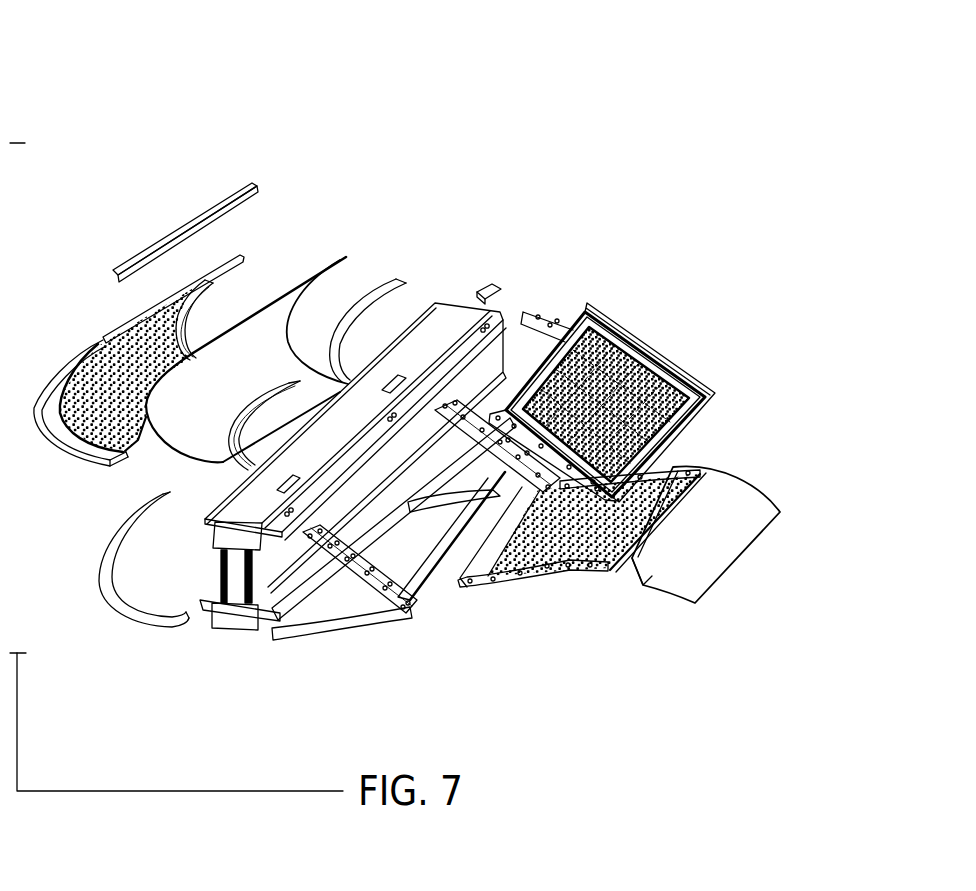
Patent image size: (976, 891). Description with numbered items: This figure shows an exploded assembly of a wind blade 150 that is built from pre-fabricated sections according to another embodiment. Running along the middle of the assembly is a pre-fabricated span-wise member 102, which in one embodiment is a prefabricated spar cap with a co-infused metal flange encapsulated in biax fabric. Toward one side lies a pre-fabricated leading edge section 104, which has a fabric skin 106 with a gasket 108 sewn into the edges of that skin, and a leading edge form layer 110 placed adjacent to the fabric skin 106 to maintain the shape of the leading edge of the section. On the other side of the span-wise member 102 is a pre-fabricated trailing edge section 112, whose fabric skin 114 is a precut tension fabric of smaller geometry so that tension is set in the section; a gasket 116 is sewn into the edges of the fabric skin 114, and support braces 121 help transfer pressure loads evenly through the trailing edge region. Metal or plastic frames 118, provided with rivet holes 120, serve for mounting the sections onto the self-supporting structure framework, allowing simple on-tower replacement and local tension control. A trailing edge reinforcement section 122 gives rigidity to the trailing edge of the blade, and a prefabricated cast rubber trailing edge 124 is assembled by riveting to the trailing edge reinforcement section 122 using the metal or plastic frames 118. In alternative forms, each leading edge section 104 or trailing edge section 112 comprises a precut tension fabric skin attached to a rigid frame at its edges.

The wind blade 150 is at (146, 60).
The pre-fabricated span-wise member 102 is at (455, 302).
The pre-fabricated leading edge section 104 is at (98, 308).
The fabric skin 106 is at (190, 337).
The gasket 108 is at (73, 443).
The leading edge form layer 110 is at (344, 257).
The pre-fabricated trailing edge section 112 is at (733, 364).
The fabric skin 114 is at (688, 428).
The gasket 116 is at (690, 368).
The metal or plastic frame 118 is at (503, 311).
The rivet hole 120 is at (558, 320).
The support brace 121 is at (650, 345).
The trailing edge reinforcement section 122 is at (427, 575).
The prefabricated cast rubber trailing edge 124 is at (727, 532).